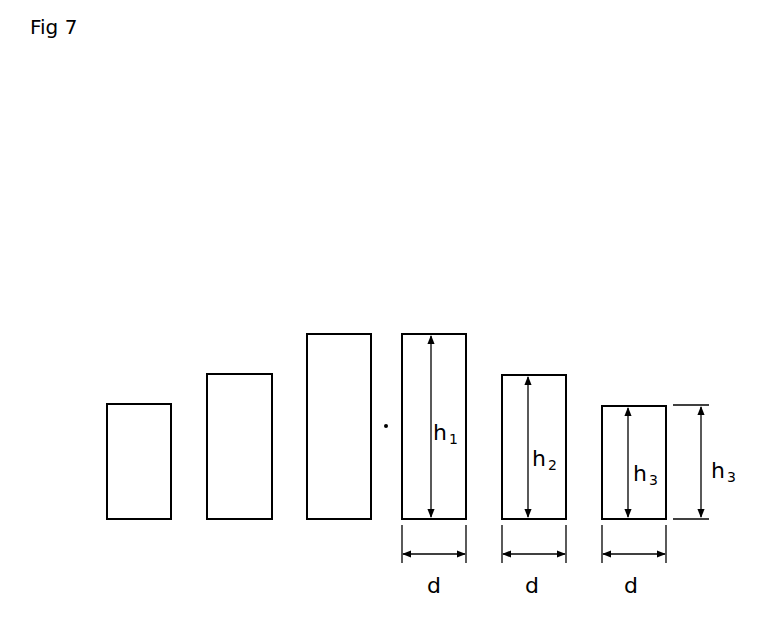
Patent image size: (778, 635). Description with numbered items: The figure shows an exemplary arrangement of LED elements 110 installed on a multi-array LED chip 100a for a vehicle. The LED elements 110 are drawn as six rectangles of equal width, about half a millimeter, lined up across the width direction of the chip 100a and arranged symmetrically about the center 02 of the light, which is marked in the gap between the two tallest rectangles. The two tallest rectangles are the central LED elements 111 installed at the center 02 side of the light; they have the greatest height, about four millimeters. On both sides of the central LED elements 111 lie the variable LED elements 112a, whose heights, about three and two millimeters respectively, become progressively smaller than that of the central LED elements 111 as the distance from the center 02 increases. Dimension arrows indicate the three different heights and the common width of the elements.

The multi-array LED chip for a vehicle 100a is at (110, 185).
The LED elements 110 is at (569, 218).
The central LED elements 111 is at (420, 347).
The variable LED elements 112a is at (138, 418).
The center of the light 02 is at (386, 426).